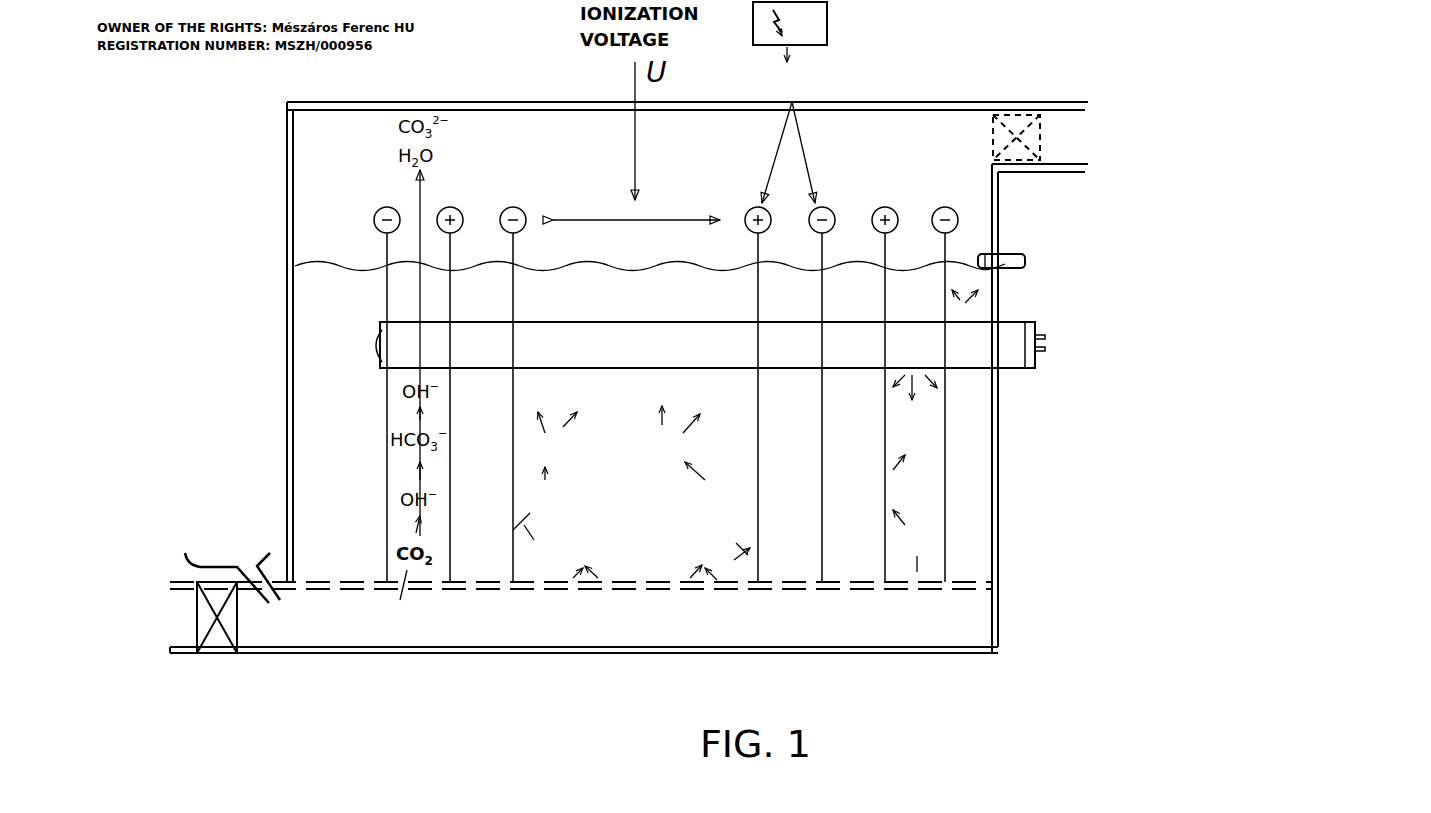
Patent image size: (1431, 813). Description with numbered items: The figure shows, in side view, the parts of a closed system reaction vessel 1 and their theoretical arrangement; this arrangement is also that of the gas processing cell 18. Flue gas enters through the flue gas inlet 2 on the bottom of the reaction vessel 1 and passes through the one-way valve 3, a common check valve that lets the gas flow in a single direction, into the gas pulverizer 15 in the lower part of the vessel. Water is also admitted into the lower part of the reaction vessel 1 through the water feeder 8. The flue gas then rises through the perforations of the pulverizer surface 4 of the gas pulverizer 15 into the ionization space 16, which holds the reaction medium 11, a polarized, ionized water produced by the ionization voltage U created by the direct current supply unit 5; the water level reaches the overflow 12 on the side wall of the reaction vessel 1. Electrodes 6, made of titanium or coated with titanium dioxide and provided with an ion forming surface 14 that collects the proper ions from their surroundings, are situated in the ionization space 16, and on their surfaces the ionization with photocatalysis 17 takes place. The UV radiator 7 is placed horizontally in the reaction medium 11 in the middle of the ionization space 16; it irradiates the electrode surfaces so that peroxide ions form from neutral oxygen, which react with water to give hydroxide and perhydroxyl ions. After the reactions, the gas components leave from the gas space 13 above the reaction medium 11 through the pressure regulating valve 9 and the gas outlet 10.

The reaction vessel 1 is at (282, 122).
The flue gas inlet 2 is at (182, 619).
The one-way valve 3 is at (217, 660).
The pulverizer surface 4 is at (482, 596).
The direct current supply unit 5 is at (790, 102).
The electrodes 6 is at (372, 234).
The UV radiator 7 is at (1058, 347).
The water feeder 8 is at (166, 543).
The pressure regulating valve 9 is at (1021, 97).
The gas outlet 10 is at (1052, 140).
The reaction medium 11 is at (358, 387).
The overflow 12 is at (1037, 262).
The gas space 13 is at (905, 157).
The ion forming surface 14 is at (934, 464).
The gas pulverizer 15 is at (960, 618).
The ionization space 16 is at (637, 548).
The ionization with photocatalysis 17 is at (930, 403).
The gas processing cell 18 is at (366, 660).